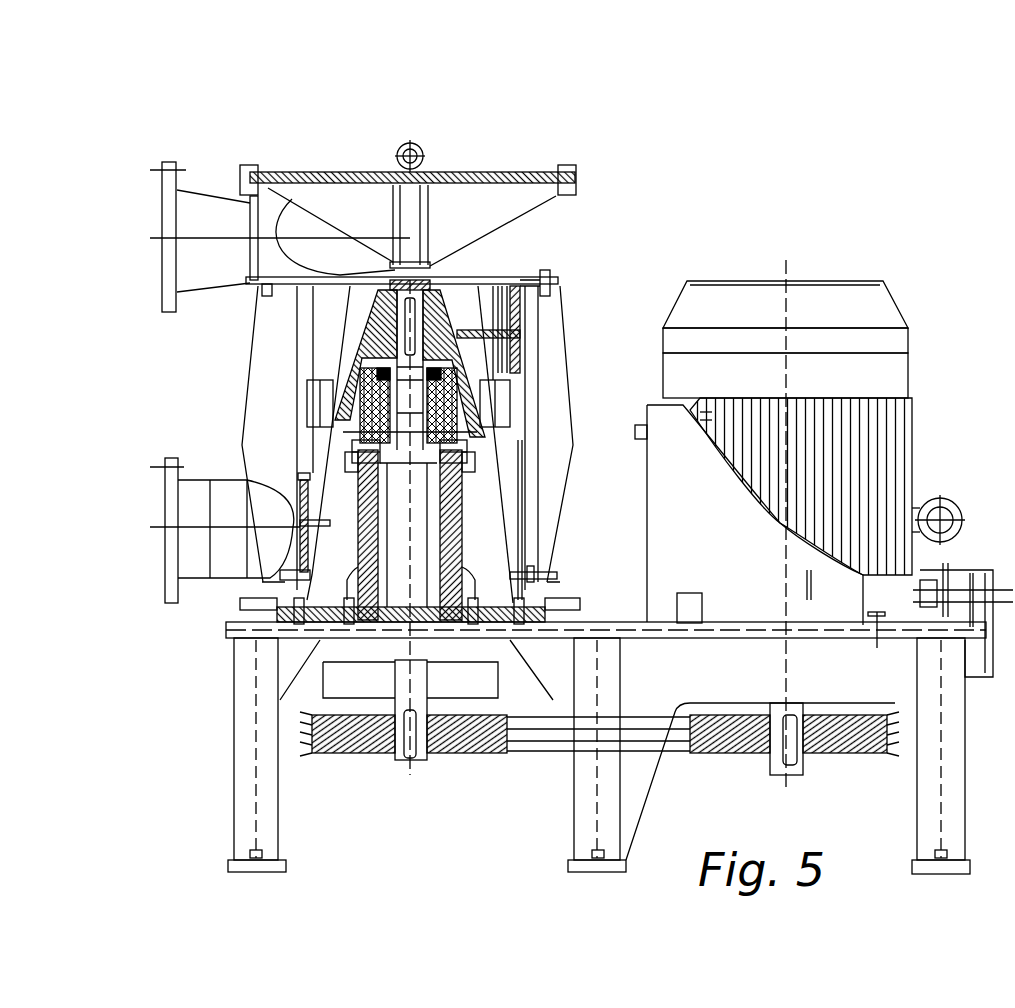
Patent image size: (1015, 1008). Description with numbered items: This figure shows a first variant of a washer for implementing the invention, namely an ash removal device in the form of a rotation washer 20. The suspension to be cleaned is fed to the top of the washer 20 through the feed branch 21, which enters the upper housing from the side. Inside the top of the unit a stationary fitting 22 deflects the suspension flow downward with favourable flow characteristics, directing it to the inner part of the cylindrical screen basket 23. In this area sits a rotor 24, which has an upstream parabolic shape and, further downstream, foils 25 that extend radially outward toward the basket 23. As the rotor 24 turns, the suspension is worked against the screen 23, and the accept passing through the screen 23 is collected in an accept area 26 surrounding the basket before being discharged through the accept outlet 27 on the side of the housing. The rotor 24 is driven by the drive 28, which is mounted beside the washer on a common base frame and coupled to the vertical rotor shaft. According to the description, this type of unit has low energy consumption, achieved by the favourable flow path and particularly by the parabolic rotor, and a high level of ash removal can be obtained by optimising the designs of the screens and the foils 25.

The rotation washer 20 is at (585, 112).
The feed branch 21 is at (208, 222).
The stationary fitting 22 is at (351, 212).
The cylindrical screen basket 23 is at (515, 440).
The rotor 24 is at (436, 330).
The foils 25 is at (333, 315).
The accept area 26 is at (270, 437).
The accept outlet 27 is at (200, 548).
The drive 28 is at (833, 320).